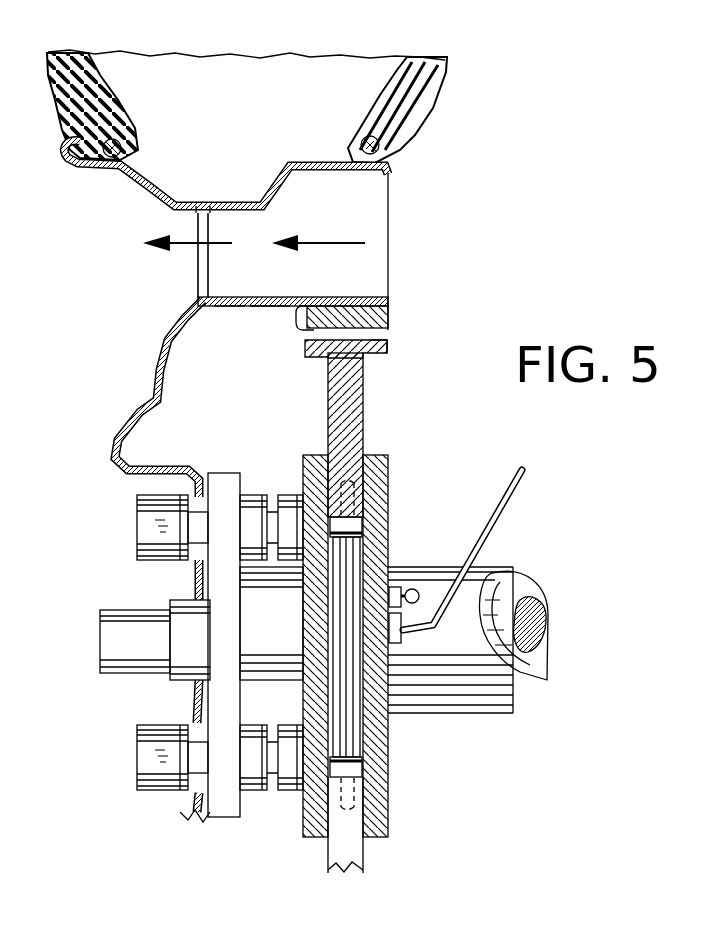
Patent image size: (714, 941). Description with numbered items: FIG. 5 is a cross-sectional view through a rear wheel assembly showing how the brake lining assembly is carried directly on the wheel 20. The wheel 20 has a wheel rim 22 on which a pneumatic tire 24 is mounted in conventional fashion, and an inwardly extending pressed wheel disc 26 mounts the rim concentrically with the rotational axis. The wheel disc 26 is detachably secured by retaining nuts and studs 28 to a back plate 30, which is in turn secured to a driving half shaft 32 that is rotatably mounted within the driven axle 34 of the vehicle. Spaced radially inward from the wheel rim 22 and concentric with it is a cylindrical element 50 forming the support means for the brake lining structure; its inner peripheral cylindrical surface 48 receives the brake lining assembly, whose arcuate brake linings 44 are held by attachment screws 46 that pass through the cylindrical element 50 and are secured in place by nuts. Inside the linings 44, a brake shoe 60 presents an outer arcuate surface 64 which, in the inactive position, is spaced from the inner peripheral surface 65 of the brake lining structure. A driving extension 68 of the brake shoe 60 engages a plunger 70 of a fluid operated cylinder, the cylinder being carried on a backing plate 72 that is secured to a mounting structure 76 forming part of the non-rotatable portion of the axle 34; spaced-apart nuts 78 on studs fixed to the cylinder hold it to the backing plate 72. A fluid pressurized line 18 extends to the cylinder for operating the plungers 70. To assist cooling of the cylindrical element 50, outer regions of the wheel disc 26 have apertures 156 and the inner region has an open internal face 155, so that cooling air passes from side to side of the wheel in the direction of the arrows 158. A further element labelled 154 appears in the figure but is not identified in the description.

The fluid pressurized line 18 is at (500, 492).
The wheel 20 is at (126, 44).
The wheel rim 22 is at (392, 152).
The pneumatic tire 24 is at (420, 62).
The wheel disc 26 is at (188, 203).
The retaining nuts and studs 28 is at (145, 524).
The back plate 30 is at (224, 472).
The driving half shaft 32 is at (185, 612).
The driven axle 34 is at (484, 566).
The brake linings 44 is at (388, 327).
The attachment screws 46 is at (384, 310).
The inner peripheral cylindrical surface 48 is at (233, 307).
The cylindrical element 50 is at (265, 308).
The brake shoe 60 is at (372, 355).
The outer arcuate surface 64 is at (380, 337).
The inner peripheral surface 65 is at (296, 297).
The driving extension 68 is at (330, 408).
The plunger 70 is at (352, 484).
The backing plate 72 is at (380, 514).
The mounting structure 76 is at (312, 820).
The nuts 78 is at (284, 497).
The tube 154 is at (390, 196).
The open internal face 155 is at (385, 262).
The apertures 156 is at (200, 262).
The arrows 158 is at (222, 203).